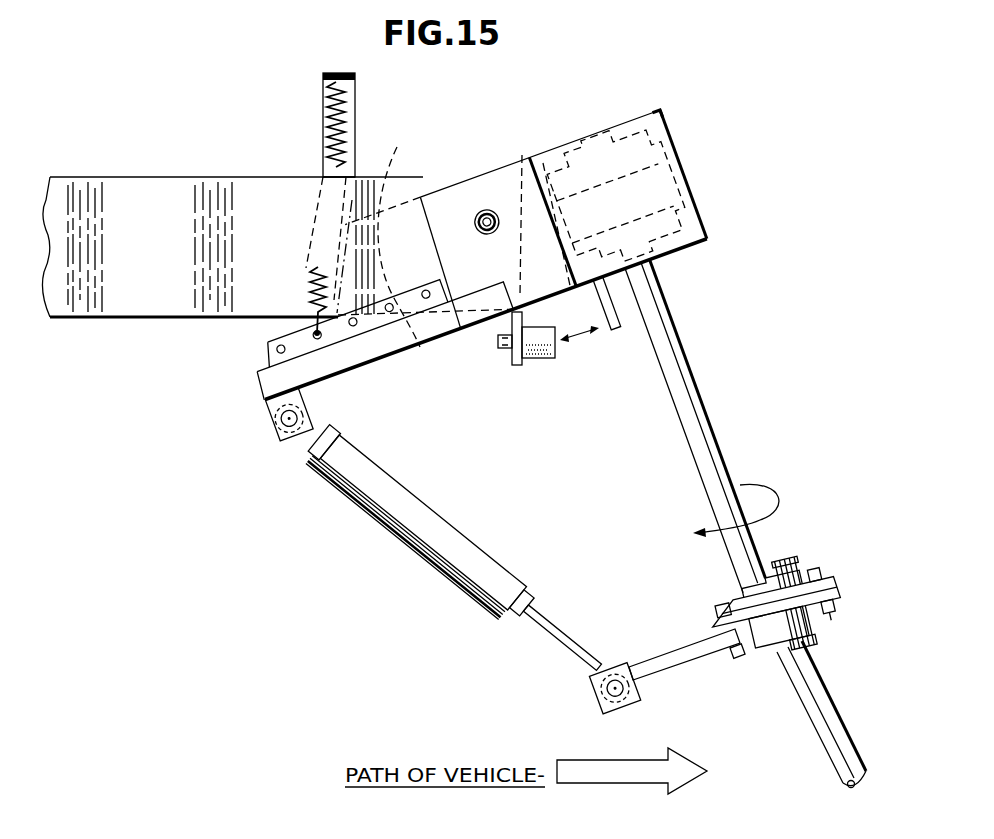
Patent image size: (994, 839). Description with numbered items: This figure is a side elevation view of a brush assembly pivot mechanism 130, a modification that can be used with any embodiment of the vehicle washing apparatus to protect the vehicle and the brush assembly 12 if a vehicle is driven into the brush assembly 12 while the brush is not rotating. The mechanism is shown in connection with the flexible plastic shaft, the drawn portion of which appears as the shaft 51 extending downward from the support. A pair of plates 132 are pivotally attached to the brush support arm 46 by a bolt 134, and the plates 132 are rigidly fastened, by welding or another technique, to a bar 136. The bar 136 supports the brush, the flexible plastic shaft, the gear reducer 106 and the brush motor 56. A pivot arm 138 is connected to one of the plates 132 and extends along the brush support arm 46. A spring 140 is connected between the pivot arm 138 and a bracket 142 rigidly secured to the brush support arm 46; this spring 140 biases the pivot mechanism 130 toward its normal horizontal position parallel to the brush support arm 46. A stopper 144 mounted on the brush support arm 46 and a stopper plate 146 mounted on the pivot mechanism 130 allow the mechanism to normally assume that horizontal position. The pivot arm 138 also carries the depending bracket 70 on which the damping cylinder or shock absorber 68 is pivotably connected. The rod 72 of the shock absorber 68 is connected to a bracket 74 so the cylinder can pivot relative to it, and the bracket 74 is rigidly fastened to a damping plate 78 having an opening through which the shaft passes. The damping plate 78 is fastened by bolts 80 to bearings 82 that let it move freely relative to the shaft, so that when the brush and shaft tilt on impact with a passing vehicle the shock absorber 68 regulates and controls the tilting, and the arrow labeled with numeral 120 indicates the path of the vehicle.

The brush assembly 12 is at (740, 455).
The brush support arm 46 is at (150, 185).
The arm 51 is at (700, 398).
The brush motor 56 is at (458, 233).
The damping cylinder or shock absorber 68 is at (350, 500).
The bracket 70 is at (270, 420).
The rod 72 is at (548, 622).
The bracket 74 is at (600, 706).
The damping plate 78 is at (685, 672).
The bolts 80 is at (833, 620).
The bearings 82 is at (782, 570).
The gear reducer 106 is at (634, 183).
The element 120 is at (604, 838).
The brush assembly pivot mechanism 130 is at (666, 106).
The plates 132 is at (495, 185).
The bolt 134 is at (483, 212).
The bar 136 is at (683, 228).
The pivot arm 138 is at (262, 376).
The spring 140 is at (326, 130).
The bracket 142 is at (330, 76).
The stopper 144 is at (530, 360).
The stopper plate 146 is at (613, 330).